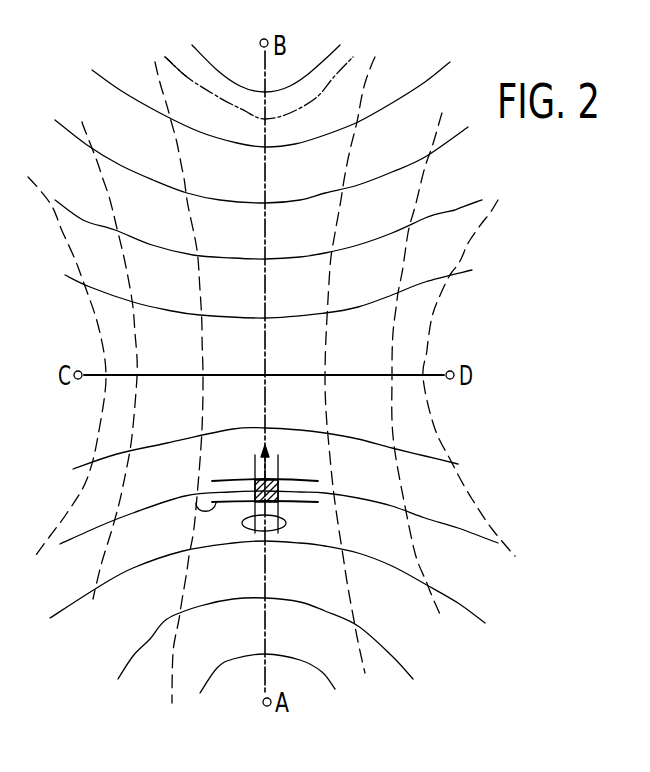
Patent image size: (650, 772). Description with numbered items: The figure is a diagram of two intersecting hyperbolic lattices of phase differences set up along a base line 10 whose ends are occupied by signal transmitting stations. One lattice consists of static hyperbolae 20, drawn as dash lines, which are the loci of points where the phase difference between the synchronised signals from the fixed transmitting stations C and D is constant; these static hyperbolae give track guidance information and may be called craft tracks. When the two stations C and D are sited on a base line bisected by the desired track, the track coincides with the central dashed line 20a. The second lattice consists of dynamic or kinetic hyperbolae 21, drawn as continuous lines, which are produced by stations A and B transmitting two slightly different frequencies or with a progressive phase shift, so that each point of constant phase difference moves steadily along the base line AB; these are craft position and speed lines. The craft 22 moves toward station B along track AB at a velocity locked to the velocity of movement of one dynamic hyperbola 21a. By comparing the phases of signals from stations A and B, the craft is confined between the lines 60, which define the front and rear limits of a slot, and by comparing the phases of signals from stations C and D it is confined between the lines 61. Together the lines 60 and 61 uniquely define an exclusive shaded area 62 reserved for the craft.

The base line 10 is at (168, 60).
The static hyperbolae 20 is at (421, 181).
The central dashed line 20a is at (276, 71).
The dynamic hyperbolae 21 is at (452, 210).
The dynamic hyperbola line 21a is at (442, 519).
The craft 22 is at (283, 478).
The slot lines 60 is at (214, 481).
The track slot lines 61 is at (285, 518).
The shaded area 62 is at (254, 481).